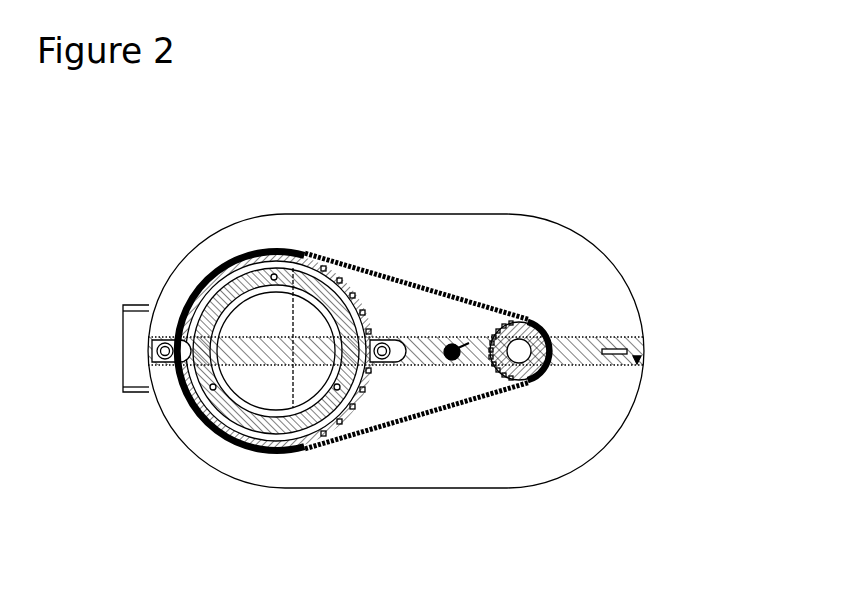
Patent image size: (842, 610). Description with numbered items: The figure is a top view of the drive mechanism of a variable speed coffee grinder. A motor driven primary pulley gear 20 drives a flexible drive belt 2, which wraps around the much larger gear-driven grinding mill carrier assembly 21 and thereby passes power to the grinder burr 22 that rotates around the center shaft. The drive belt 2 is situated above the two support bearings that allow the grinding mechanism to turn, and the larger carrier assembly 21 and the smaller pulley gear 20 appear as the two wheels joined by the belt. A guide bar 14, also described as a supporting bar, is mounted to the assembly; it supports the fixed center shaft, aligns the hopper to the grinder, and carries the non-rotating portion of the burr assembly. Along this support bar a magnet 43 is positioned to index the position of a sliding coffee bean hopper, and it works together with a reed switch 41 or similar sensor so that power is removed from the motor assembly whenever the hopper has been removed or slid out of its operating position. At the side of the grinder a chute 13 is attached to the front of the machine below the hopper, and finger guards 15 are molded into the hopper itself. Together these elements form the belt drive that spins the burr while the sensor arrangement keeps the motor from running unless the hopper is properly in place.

The drive belt 2 is at (497, 397).
The chute 13 is at (122, 376).
The guide bar 14 is at (165, 362).
The finger guards 15 is at (396, 393).
The primary pulley gear 20 is at (534, 388).
The grinding mill carrier assembly 21 is at (350, 404).
The grinder burr 22 is at (273, 453).
The reed switch 41 is at (640, 361).
The magnet 43 is at (510, 315).